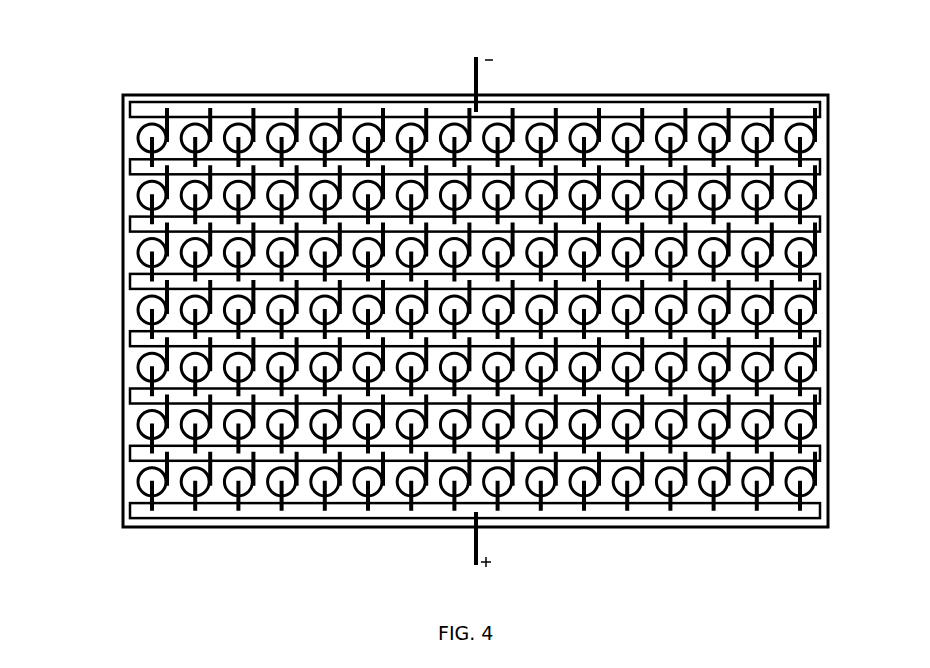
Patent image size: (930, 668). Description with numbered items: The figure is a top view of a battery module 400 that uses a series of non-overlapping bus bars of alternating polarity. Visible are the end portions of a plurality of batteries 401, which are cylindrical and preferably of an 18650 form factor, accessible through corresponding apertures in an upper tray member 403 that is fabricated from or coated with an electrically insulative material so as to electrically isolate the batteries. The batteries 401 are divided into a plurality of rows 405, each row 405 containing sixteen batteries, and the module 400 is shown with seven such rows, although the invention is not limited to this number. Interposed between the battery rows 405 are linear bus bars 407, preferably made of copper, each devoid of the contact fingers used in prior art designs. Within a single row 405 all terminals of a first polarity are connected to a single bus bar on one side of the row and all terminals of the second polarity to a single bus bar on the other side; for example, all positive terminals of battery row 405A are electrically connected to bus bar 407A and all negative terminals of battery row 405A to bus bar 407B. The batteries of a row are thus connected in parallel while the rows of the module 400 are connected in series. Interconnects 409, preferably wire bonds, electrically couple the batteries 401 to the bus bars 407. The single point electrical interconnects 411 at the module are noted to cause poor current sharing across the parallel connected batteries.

The battery module 400 is at (146, 81).
The battery 401 is at (182, 253).
The upper tray member 403 is at (706, 95).
The row 405 is at (830, 253).
The battery row 405A is at (830, 482).
The linear bus bar 407 is at (130, 223).
The bus bar 407A is at (138, 511).
The bus bar 407B is at (135, 453).
The interconnect 409 is at (813, 433).
The electrical interconnect 411 is at (473, 80).